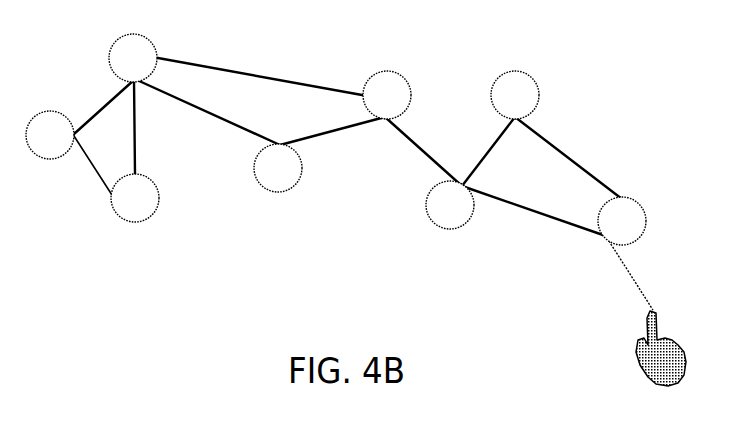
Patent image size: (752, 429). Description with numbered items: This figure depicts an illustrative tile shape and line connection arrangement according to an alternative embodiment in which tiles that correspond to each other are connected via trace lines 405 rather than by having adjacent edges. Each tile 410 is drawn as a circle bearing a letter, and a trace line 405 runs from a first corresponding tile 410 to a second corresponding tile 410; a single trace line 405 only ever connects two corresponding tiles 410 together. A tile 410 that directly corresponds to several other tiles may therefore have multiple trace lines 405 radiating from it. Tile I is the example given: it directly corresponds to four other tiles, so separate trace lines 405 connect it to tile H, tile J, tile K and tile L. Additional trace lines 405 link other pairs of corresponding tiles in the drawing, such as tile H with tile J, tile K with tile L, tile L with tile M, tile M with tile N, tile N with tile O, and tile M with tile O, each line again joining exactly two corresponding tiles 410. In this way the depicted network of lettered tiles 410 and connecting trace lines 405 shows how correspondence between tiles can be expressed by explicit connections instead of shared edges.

The trace line 405 is at (97, 113).
The tile 410 is at (367, 134).
The tile H is at (50, 135).
The tile I is at (133, 58).
The tile J is at (135, 198).
The tile K is at (278, 168).
The tile L is at (387, 95).
The node M is at (450, 205).
The node N is at (515, 95).
The node O is at (622, 221).